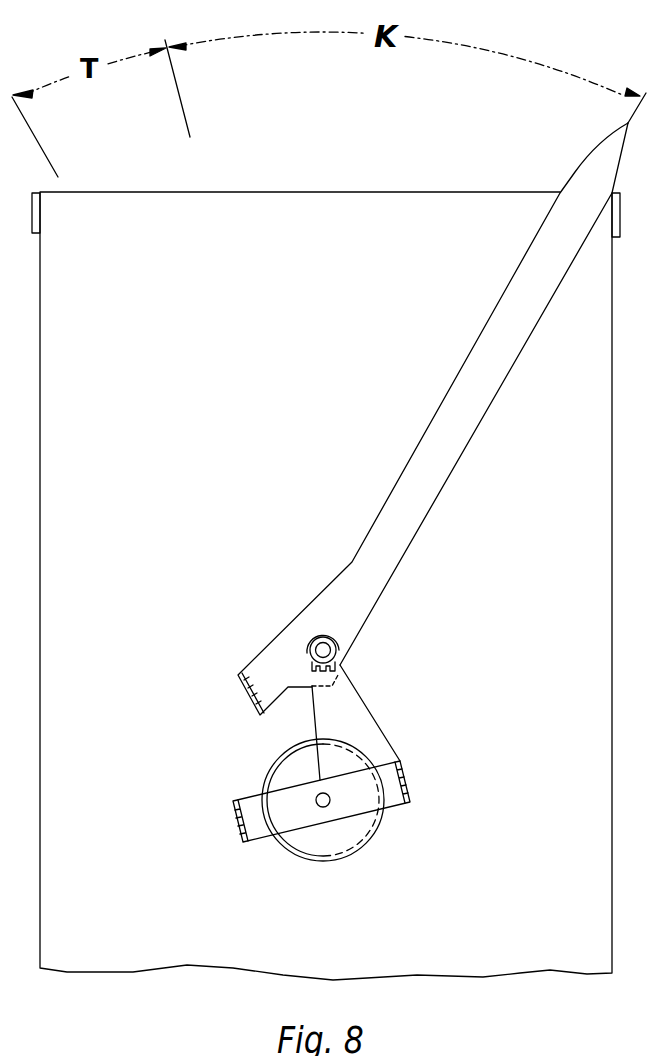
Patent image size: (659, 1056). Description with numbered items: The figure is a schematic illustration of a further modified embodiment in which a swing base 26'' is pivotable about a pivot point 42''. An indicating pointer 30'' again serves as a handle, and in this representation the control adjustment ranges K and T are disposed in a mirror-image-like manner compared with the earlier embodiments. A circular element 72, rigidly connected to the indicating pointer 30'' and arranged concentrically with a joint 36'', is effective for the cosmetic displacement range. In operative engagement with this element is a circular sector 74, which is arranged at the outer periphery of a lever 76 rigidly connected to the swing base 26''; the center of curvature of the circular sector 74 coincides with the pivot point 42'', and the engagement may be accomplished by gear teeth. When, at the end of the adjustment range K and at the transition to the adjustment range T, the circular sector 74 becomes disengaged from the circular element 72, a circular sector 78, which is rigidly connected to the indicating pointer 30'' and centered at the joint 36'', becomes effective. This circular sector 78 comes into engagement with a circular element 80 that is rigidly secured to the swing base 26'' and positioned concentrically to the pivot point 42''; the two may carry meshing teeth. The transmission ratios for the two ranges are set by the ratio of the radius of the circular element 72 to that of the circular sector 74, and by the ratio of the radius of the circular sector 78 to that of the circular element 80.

The indicating pointer 30'' is at (433, 419).
The circular element 72 is at (308, 641).
The joint 36'' is at (373, 646).
The circular sector 74 is at (340, 672).
The circular sector 78 is at (238, 677).
The lever 76 is at (360, 720).
The circular element 80 is at (347, 845).
The swing base 26'' is at (316, 835).
The pivot point 42'' is at (298, 851).